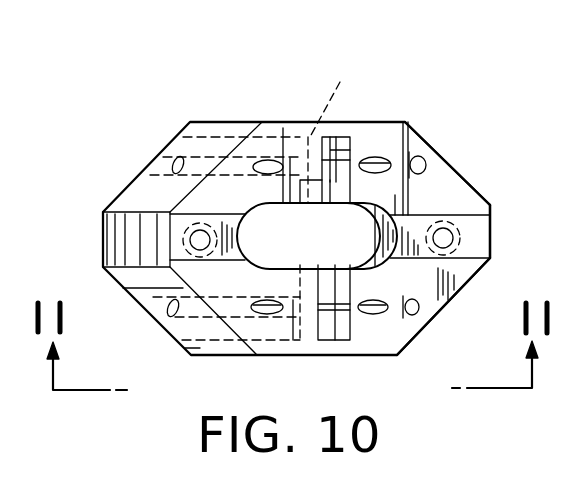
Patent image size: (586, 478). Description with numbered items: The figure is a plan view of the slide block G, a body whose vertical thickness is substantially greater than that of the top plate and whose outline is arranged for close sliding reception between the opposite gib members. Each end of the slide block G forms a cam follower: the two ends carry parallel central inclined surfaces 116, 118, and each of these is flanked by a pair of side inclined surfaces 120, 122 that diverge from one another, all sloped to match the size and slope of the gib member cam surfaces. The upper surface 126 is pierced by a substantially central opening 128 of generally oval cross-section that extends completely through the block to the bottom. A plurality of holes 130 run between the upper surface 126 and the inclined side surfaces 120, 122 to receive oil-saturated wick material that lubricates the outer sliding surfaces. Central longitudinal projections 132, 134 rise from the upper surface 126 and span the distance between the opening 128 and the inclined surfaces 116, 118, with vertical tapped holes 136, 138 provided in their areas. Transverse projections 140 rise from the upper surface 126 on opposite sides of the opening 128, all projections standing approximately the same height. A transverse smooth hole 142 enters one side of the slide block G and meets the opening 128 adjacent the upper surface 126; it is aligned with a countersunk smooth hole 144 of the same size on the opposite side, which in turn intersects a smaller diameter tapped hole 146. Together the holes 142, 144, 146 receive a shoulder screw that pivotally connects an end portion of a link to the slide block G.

The central inclined surface 116 is at (133, 230).
The central inclined surface 118 is at (492, 233).
The side inclined surface 120 is at (143, 288).
The side inclined surface 122 is at (482, 278).
The upper surface 126 is at (268, 138).
The central opening 128 is at (253, 212).
The holes 130 is at (372, 310).
The central longitudinal projection 132 is at (182, 225).
The central longitudinal projection 134 is at (466, 222).
The vertical tapped hole 136 is at (200, 240).
The vertical tapped hole 138 is at (445, 240).
The transverse projection 140 is at (330, 328).
The transverse smooth hole 142 is at (300, 327).
The countersunk smooth hole 144 is at (303, 184).
The tapped hole 146 is at (341, 150).
The slide block G is at (291, 124).